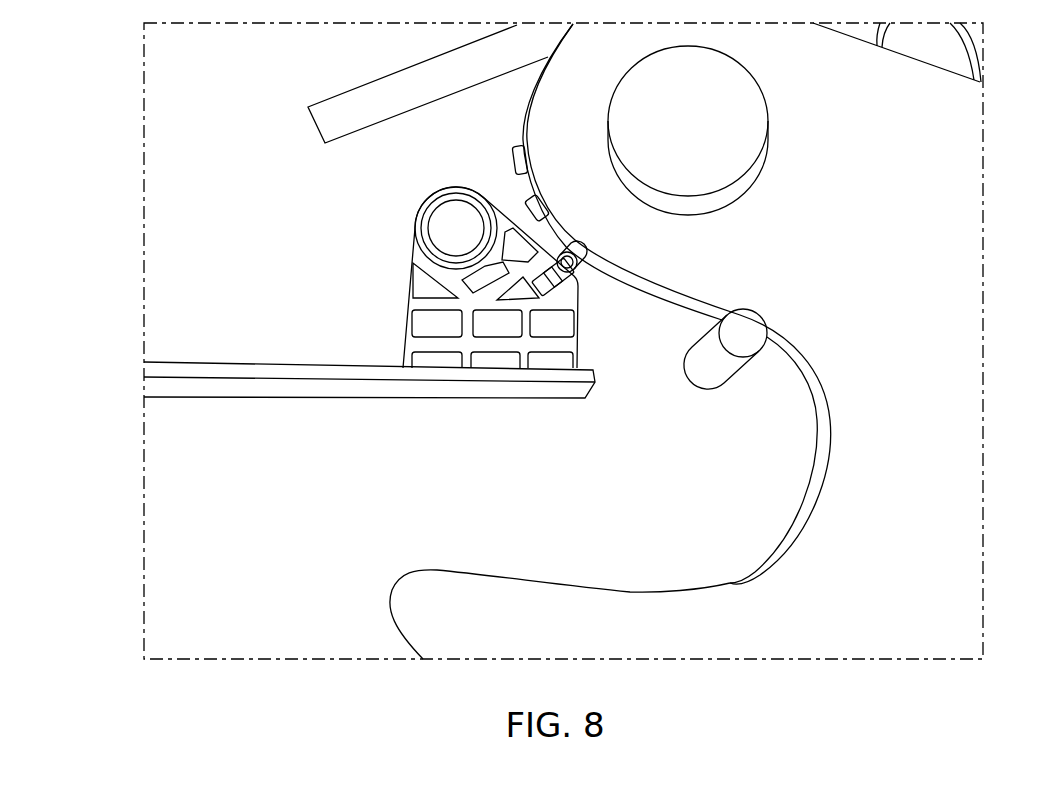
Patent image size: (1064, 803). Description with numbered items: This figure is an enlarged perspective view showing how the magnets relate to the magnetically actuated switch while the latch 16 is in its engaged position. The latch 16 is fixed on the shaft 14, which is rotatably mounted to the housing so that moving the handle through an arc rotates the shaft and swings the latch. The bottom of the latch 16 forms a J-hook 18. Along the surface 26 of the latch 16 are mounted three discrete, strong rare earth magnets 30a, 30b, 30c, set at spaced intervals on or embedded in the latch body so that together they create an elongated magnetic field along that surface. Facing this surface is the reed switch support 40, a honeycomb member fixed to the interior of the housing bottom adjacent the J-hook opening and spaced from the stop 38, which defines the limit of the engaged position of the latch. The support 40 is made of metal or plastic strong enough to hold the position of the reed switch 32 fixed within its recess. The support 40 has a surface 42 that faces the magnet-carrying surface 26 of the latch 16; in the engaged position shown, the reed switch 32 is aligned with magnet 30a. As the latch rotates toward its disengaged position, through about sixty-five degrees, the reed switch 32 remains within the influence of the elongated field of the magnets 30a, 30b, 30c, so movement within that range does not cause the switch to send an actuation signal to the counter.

The shaft 14 is at (713, 130).
The latch 16 is at (945, 333).
The J-hook 18 is at (488, 607).
The surface of latch 26 is at (645, 278).
The magnet 30a is at (530, 153).
The magnet 30b is at (547, 212).
The magnet 30c is at (578, 252).
The reed switch 32 is at (563, 283).
The stop 38 is at (743, 328).
The reed switch support 40 is at (398, 315).
The surface of support 42 is at (485, 190).